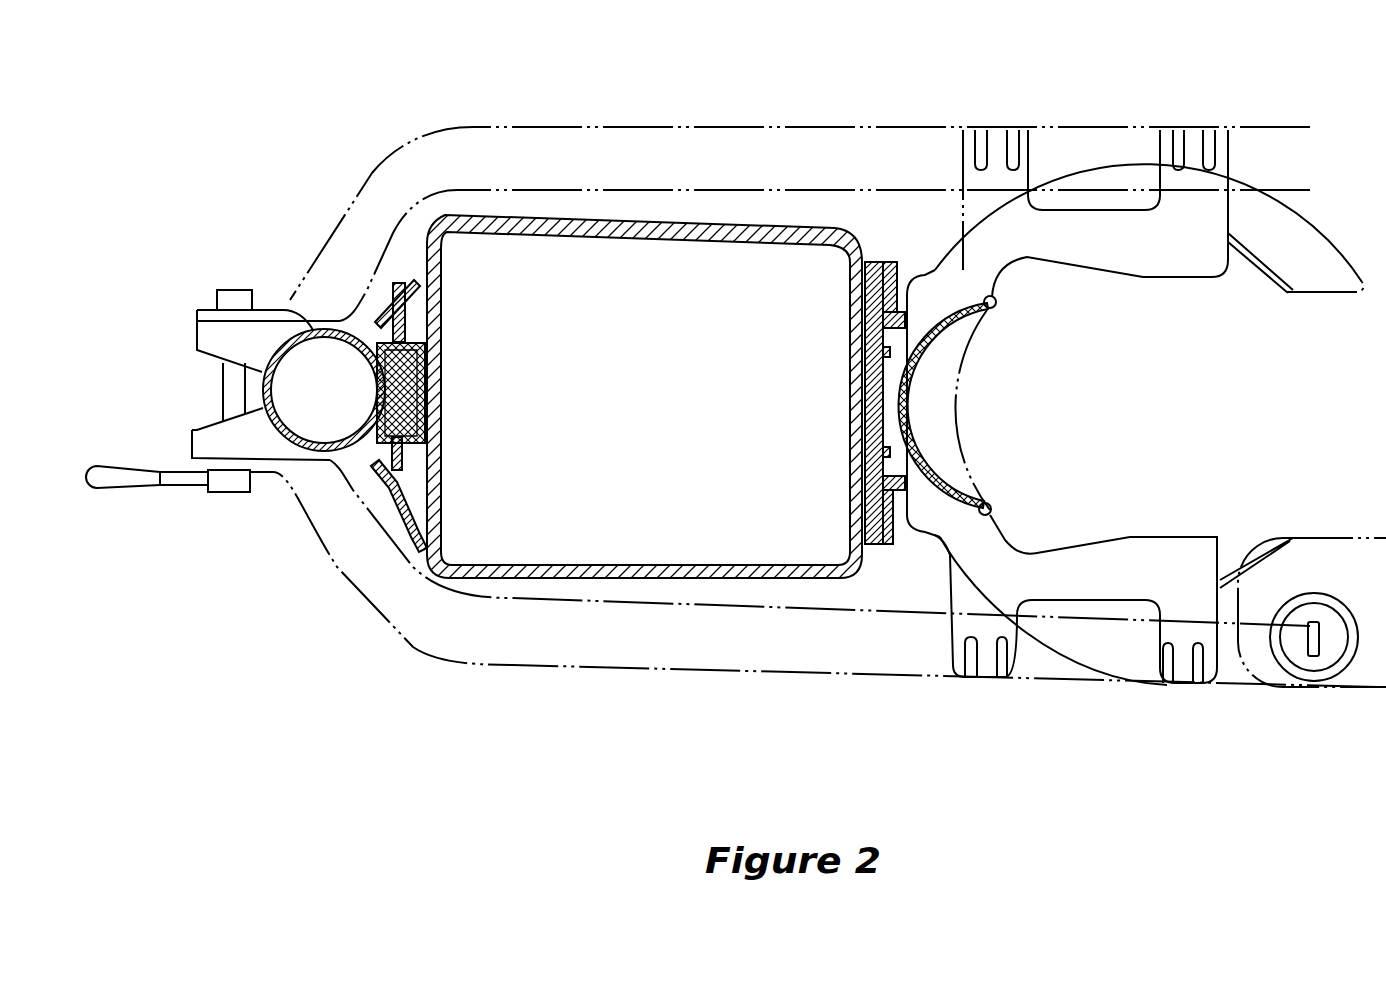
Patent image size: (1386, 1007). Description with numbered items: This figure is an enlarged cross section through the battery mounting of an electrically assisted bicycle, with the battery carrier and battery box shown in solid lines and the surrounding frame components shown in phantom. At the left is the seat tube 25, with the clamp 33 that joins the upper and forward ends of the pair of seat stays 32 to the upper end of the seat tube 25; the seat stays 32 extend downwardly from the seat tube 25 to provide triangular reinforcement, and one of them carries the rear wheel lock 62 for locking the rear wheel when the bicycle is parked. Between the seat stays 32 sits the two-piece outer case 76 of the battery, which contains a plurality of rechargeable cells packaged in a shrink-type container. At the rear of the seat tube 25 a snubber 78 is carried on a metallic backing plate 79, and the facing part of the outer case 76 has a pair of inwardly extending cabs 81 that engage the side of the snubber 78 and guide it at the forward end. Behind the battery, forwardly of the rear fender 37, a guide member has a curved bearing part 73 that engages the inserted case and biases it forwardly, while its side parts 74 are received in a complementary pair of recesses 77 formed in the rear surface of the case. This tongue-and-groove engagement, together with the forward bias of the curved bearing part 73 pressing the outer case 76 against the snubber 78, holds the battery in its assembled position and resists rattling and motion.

The seat tube 25 is at (313, 327).
The seat stays 32 is at (907, 127).
The clamp 33 is at (140, 490).
The fender 37 is at (940, 540).
The rear wheel lock 62 is at (1337, 247).
The curved bearing part 73 is at (886, 403).
The side parts 74 is at (893, 262).
The outer case 76 is at (748, 222).
The recesses 77 is at (895, 292).
The snubber 78 is at (440, 363).
The metallic backing plate 79 is at (378, 392).
The inwardly extending cabs 81 is at (387, 303).